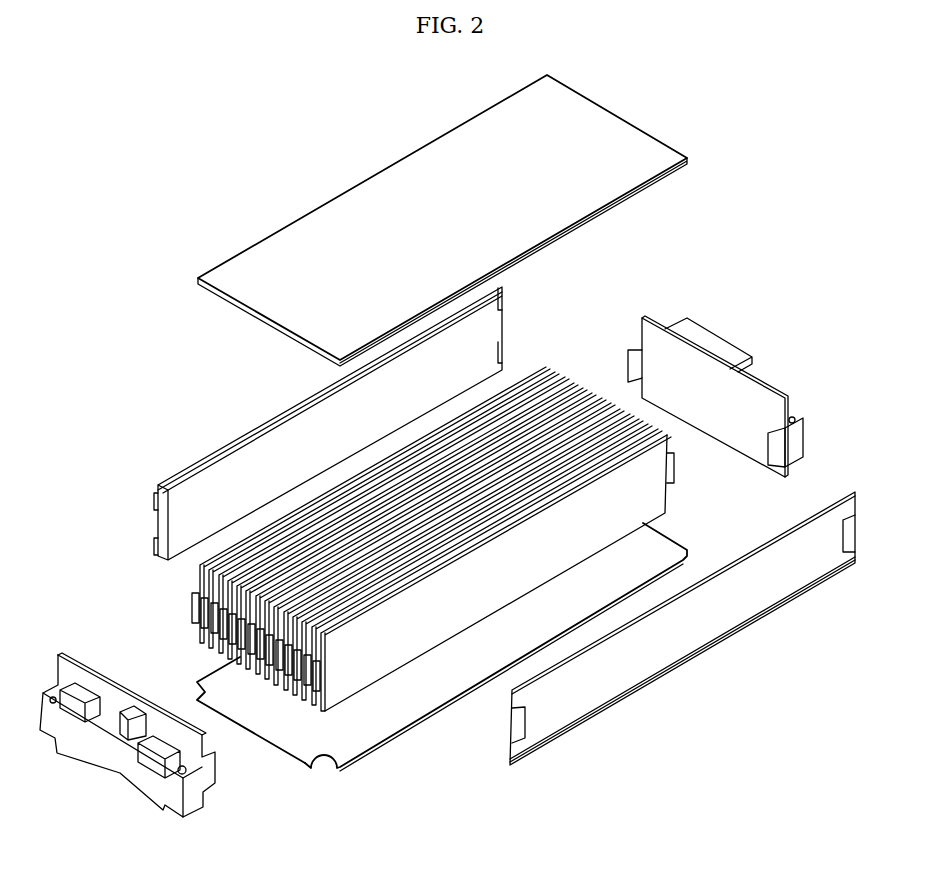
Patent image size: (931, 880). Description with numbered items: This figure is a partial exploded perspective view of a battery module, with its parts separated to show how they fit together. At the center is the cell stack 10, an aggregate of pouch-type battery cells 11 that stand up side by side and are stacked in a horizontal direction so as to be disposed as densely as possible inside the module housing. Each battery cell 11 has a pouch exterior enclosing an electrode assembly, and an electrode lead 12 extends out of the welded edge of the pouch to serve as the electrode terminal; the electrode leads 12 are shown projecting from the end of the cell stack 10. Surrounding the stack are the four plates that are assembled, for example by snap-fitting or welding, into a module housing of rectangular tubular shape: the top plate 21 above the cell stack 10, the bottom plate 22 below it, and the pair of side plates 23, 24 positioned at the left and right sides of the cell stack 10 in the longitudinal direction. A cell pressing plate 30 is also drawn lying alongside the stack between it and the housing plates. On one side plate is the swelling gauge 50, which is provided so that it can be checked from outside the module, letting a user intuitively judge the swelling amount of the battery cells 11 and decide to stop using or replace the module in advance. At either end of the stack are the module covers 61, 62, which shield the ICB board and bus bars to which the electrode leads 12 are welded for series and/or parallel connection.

The cell stack 10 is at (394, 539).
The battery cell 11 is at (202, 589).
The electrode lead 12 is at (195, 623).
The top plate 21 is at (398, 178).
The bottom plate 22 is at (310, 753).
The side plate 23 is at (618, 672).
The side plate 24 is at (158, 497).
The cell pressing plate 30 is at (170, 527).
The swelling gauge 50 is at (685, 629).
The module cover 61 is at (120, 775).
The module cover 62 is at (767, 382).